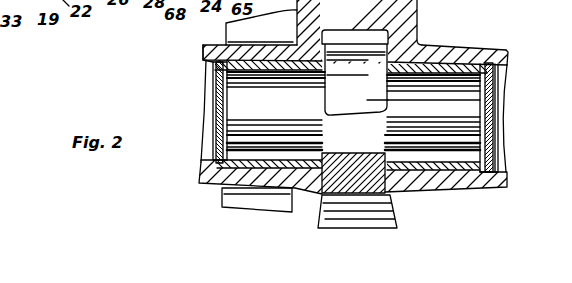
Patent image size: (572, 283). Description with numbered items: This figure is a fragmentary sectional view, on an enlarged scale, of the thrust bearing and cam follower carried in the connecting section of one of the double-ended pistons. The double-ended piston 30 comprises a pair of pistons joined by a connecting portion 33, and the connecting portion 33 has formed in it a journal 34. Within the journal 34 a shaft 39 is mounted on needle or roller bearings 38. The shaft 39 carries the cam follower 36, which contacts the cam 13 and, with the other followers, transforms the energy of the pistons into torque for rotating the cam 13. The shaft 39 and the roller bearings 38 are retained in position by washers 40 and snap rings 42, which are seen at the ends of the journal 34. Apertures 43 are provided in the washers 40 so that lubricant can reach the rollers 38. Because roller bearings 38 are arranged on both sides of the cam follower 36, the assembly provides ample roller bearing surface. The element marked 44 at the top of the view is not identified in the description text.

The cam 13 is at (401, 229).
The double-ended piston 30 is at (279, 203).
The connecting portion 33 is at (414, 24).
The journal 34 is at (467, 57).
The cam follower 36 is at (372, 92).
The roller bearings 38 is at (215, 80).
The shaft 39 is at (470, 120).
The washers 40 is at (206, 166).
The snap rings 42 is at (207, 62).
The apertures 43 is at (214, 103).
The upper cover block 44 is at (278, 0).